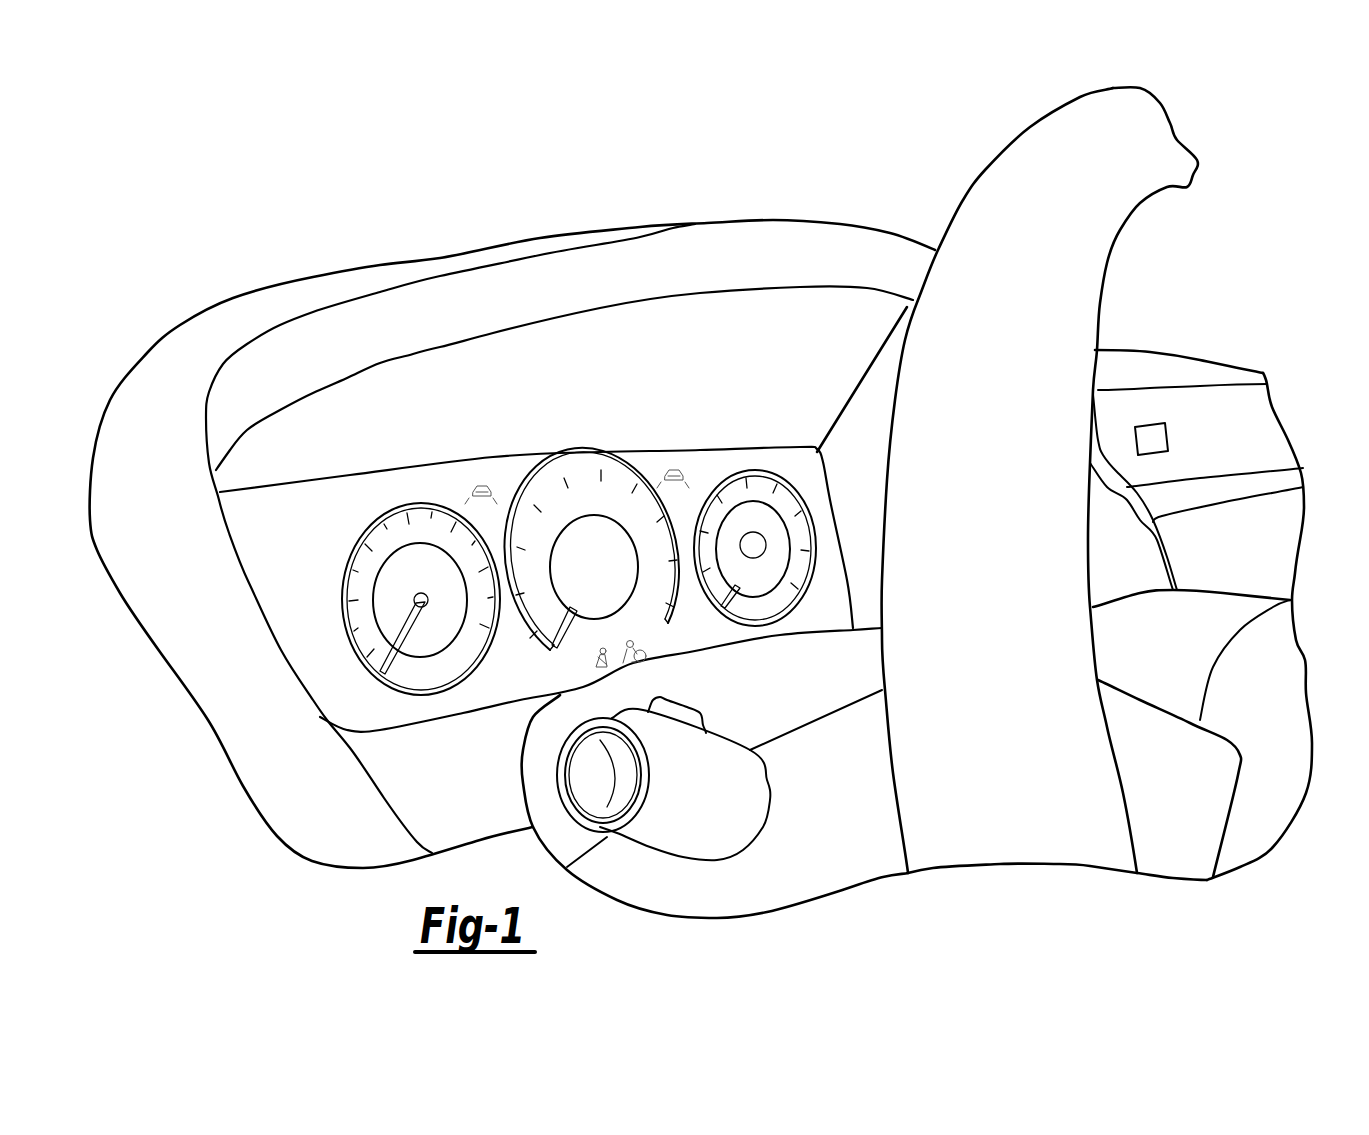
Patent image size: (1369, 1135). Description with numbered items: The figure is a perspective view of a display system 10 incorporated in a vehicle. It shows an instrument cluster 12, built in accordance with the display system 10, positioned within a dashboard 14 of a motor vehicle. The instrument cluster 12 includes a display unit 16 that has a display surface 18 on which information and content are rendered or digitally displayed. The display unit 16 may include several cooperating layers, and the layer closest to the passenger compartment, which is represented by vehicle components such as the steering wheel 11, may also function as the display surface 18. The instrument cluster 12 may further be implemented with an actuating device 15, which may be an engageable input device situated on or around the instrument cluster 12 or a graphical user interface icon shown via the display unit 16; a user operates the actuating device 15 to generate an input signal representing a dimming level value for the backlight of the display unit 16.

The display system 10 is at (512, 524).
The steering wheel 11 is at (1081, 113).
The instrument cluster 12 is at (551, 463).
The dashboard 14 is at (363, 337).
The actuating device 15 is at (1168, 437).
The display unit 16 is at (305, 626).
The display surface 18 is at (702, 473).